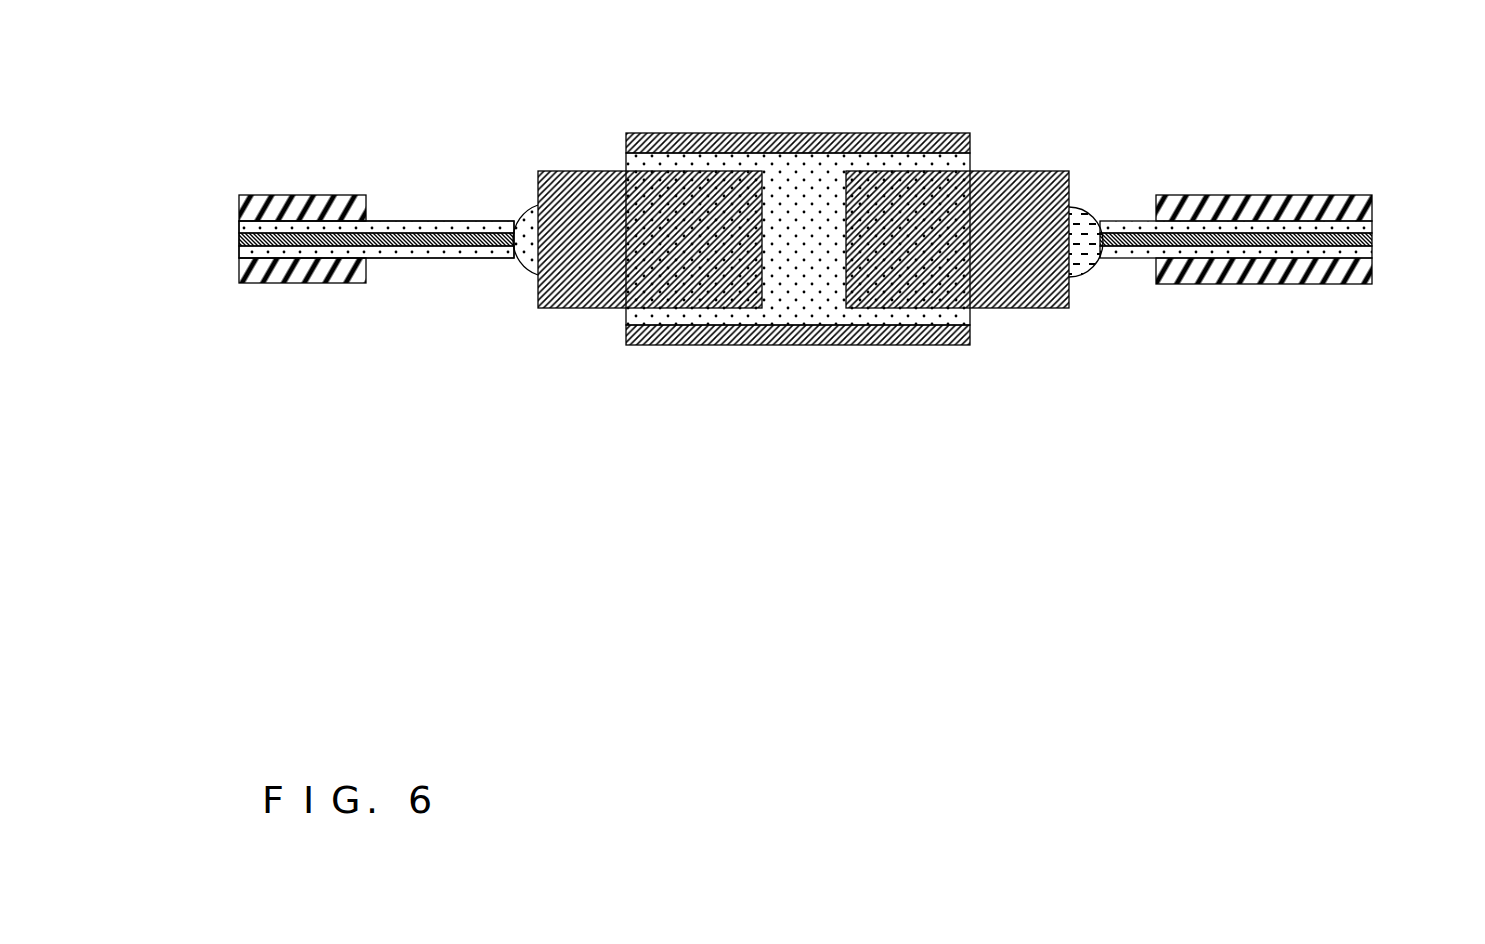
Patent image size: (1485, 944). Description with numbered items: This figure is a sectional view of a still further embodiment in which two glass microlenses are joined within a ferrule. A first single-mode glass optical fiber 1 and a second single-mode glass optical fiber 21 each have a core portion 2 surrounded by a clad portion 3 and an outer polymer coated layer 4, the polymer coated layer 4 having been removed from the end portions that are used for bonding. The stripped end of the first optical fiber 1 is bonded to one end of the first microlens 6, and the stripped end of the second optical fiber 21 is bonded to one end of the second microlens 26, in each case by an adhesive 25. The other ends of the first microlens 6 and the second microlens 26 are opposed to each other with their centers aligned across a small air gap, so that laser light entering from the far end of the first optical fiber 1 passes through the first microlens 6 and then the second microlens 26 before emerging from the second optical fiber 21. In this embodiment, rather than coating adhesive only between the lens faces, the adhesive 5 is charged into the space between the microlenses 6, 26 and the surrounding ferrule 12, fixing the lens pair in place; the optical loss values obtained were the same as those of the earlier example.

The first single-mode glass optical fiber 1 is at (1167, 153).
The core portion 2 is at (239, 241).
The clad portion 3 is at (239, 227).
The polymer coated layer 4 is at (303, 202).
The adhesive 5 is at (802, 173).
The first microlens 6 is at (995, 175).
The ferrule 12 is at (970, 340).
The second single-mode glass optical fiber 21 is at (386, 178).
The adhesive 25 is at (530, 220).
The second microlens 26 is at (590, 182).